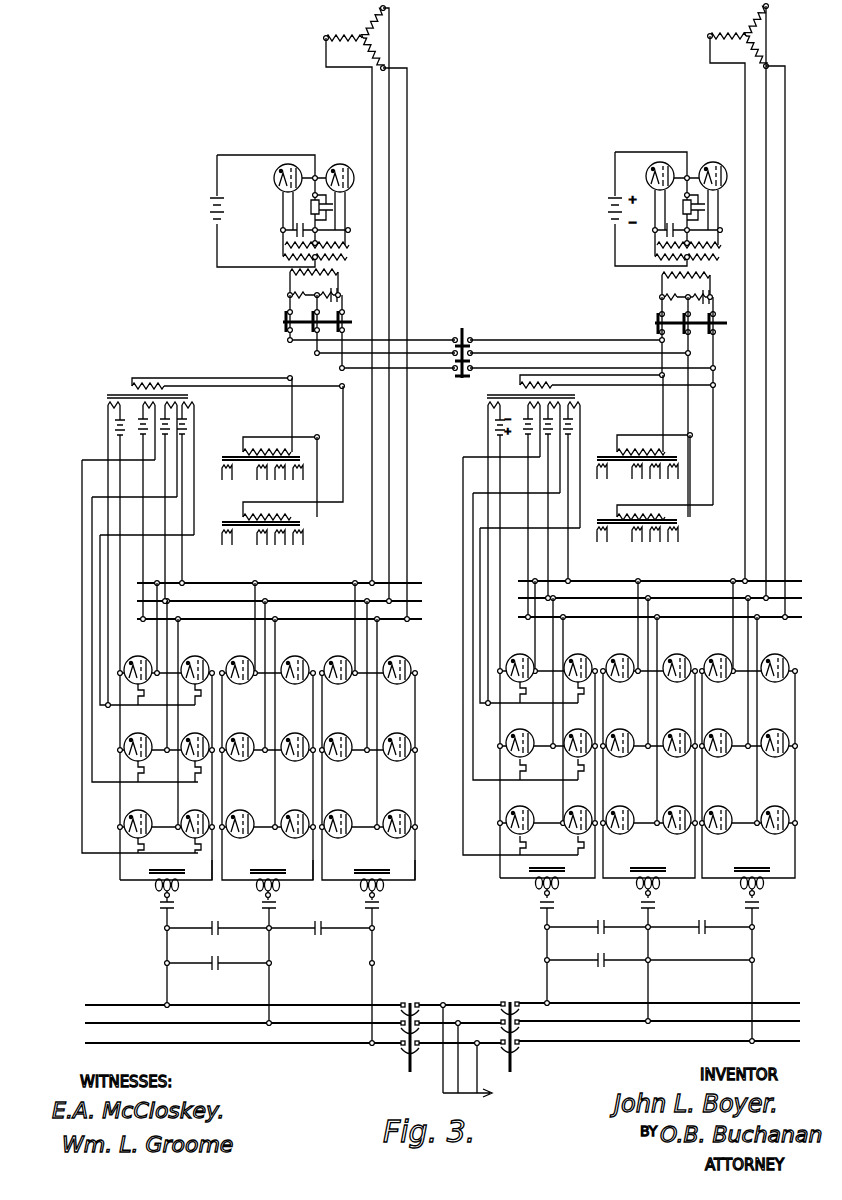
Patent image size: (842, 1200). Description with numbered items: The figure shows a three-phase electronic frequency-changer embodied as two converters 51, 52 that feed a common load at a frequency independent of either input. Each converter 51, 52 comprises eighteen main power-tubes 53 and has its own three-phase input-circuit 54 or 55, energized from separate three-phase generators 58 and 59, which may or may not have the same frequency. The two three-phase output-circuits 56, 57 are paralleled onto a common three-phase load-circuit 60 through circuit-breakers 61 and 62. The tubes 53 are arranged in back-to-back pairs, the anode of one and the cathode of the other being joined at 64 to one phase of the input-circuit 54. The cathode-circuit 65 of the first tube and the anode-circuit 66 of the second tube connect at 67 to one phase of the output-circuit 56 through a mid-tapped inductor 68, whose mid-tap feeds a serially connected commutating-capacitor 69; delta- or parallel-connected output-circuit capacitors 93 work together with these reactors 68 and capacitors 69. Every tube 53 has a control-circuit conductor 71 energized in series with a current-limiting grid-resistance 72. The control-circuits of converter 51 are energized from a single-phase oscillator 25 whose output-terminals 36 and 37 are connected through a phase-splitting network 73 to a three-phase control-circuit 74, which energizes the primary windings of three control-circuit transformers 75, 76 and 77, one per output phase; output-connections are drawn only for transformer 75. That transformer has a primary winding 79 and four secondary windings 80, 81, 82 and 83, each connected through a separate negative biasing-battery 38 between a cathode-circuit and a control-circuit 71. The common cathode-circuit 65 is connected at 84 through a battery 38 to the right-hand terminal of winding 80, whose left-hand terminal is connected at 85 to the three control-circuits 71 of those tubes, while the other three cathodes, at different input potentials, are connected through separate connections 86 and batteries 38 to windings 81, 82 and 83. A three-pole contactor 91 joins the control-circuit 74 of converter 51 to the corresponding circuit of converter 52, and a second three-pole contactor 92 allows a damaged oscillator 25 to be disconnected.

The single-phase oscillator 25 is at (276, 218).
The oscillator output-terminal 36 is at (290, 289).
The oscillator output-terminal 37 is at (339, 287).
The negative biasing-battery 38 is at (113, 427).
The converter 51 is at (256, 713).
The converter 52 is at (628, 711).
The main power-tube 53 is at (199, 657).
The three-phase input-circuit 54 is at (299, 616).
The three-phase input-circuit 55 is at (678, 614).
The three-phase output-circuit 56 is at (215, 1006).
The three-phase output-circuit 57 is at (637, 1004).
The three-phase generator 58 is at (356, 25).
The three-phase generator 59 is at (744, 23).
The common three-phase load-circuit 60 is at (467, 1055).
The circuit-breaker 61 is at (403, 1066).
The circuit-breaker 62 is at (516, 1064).
The back-to-back connection 64 is at (151, 656).
The cathode-circuit 65 is at (118, 881).
The anode-circuit 66 is at (211, 864).
The output connection 67 is at (165, 986).
The mid-tapped inductor 68 is at (155, 892).
The series capacitor 69 is at (176, 904).
The control-circuit conductor 71 is at (140, 692).
The current-limiting grid-resistance 72 is at (146, 692).
The phase-splitting network 73 is at (321, 295).
The three-phase control-circuit 74 is at (316, 306).
The control-circuit transformer 75 is at (109, 394).
The control-circuit transformer 76 is at (232, 455).
The control-circuit transformer 77 is at (232, 520).
The primary winding 79 is at (130, 380).
The secondary winding 80 is at (106, 407).
The secondary winding 81 is at (196, 406).
The secondary winding 82 is at (192, 413).
The secondary winding 83 is at (144, 407).
The connection 84 is at (121, 449).
The connection 85 is at (106, 449).
The connection 86 is at (179, 560).
The three-pole contactor 91 is at (466, 334).
The three-pole contactor 92 is at (345, 322).
The output-circuit capacitor 93 is at (218, 927).